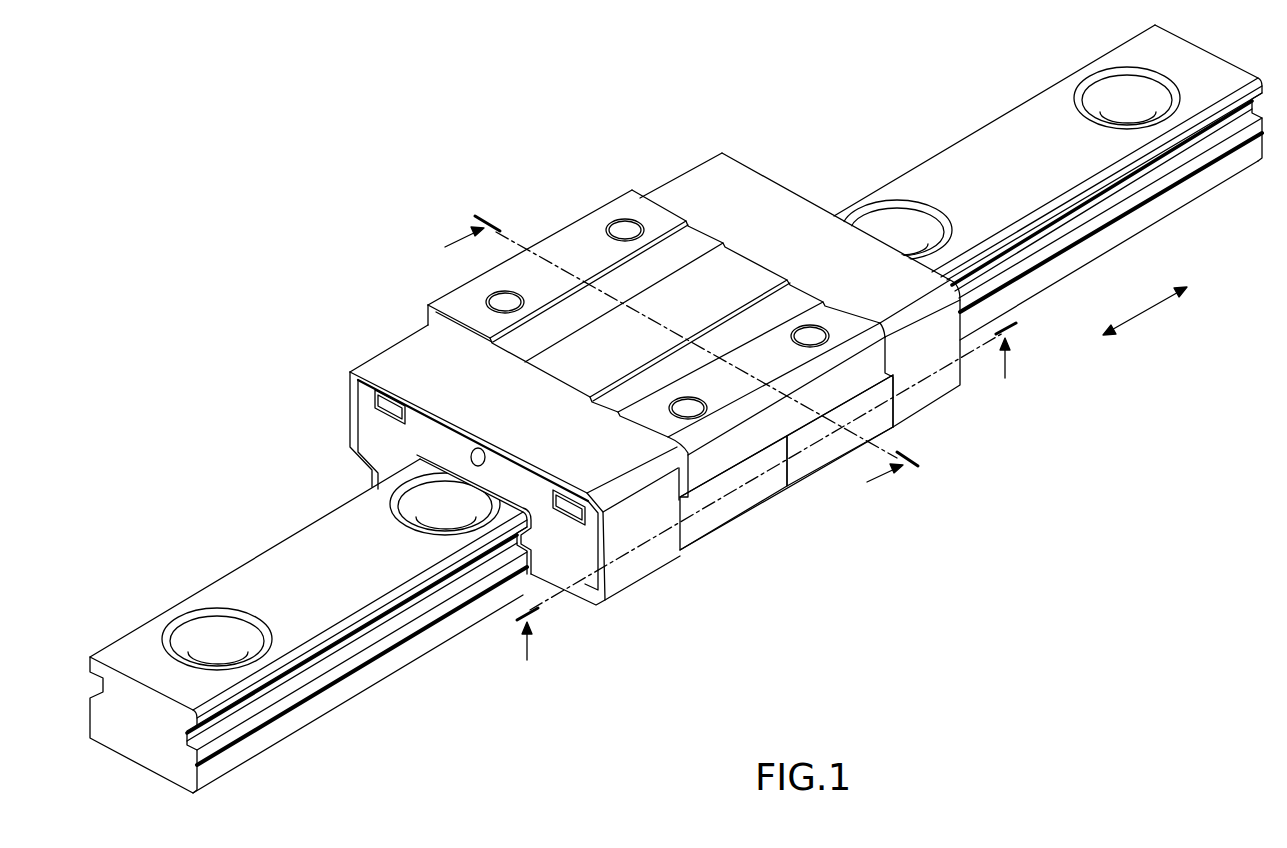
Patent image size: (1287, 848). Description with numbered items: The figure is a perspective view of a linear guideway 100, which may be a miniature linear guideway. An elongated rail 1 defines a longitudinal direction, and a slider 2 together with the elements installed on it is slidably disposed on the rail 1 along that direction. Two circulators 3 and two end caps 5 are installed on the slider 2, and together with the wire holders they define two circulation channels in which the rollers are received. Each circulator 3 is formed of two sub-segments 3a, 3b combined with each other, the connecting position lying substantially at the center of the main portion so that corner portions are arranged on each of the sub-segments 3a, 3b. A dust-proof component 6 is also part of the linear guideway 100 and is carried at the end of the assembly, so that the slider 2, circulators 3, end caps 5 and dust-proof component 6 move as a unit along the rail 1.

The linear guideway 100 is at (222, 83).
The rail 1 is at (293, 540).
The slider 2 is at (590, 214).
The circulator 3 is at (848, 533).
The sub-segment 3a is at (736, 511).
The sub-segment 3b is at (818, 465).
The end cap 5 is at (398, 345).
The dust-proof component 6 is at (383, 432).